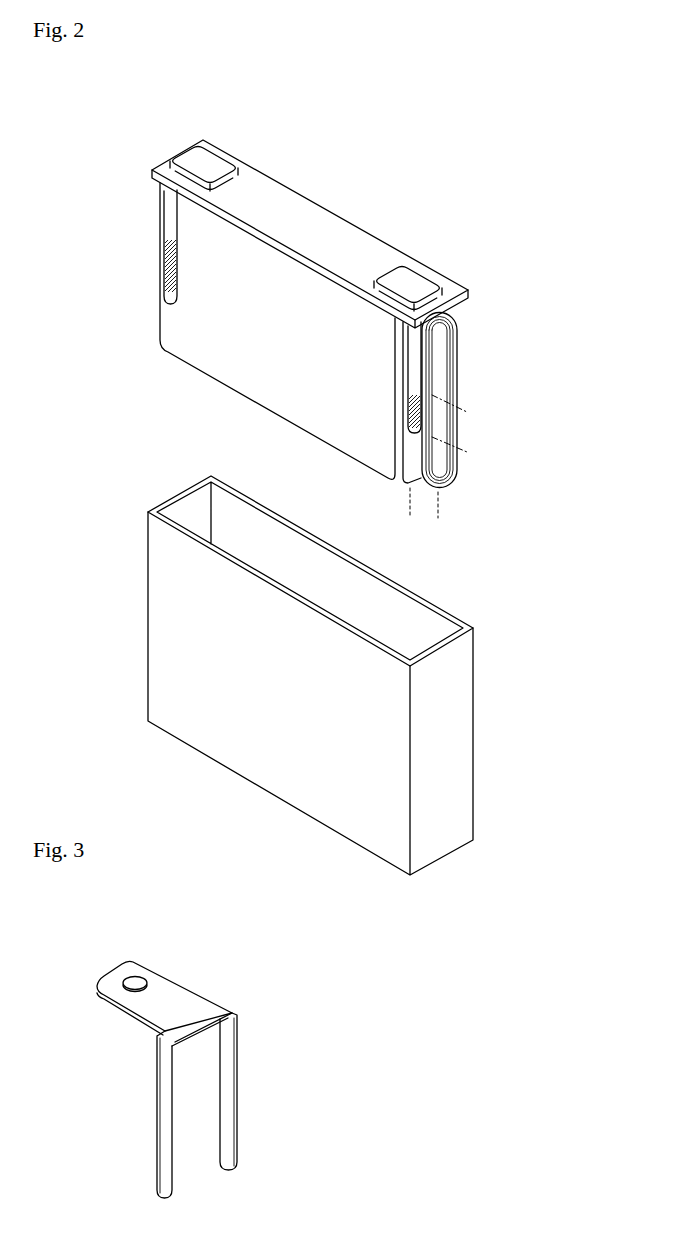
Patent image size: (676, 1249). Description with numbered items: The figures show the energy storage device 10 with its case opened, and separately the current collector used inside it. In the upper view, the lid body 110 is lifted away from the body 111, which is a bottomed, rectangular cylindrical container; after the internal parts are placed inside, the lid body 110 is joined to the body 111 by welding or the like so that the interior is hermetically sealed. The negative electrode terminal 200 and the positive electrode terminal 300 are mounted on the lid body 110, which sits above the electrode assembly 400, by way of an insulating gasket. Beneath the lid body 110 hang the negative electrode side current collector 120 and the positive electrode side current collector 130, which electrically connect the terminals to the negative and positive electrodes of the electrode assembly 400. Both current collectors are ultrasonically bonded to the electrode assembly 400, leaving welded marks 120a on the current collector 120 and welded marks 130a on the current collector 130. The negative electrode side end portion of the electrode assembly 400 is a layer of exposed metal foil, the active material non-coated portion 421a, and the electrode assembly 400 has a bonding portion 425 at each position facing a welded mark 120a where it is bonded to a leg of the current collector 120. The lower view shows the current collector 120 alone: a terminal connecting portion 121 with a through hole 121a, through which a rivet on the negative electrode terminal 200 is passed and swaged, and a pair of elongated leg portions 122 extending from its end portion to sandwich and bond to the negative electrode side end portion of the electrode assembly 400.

In FIG. 2, the energy storage device 10 is at (502, 130).
In FIG. 2, the lid body 110 is at (320, 220).
In FIG. 2, the body 111 is at (460, 722).
In FIG. 2, the negative electrode side current collector 120 is at (409, 350).
In FIG. 3, the negative electrode side current collector 120 is at (199, 1061).
In FIG. 2, the welded mark 120a is at (410, 397).
In FIG. 3, the terminal connecting portion 121 is at (168, 984).
In FIG. 3, the through hole 121a is at (131, 978).
In FIG. 3, the leg portion 122 is at (242, 1108).
In FIG. 2, the positive electrode side current collector 130 is at (159, 224).
In FIG. 2, the welded mark 130a is at (166, 256).
In FIG. 2, the negative electrode terminal 200 is at (412, 277).
In FIG. 2, the positive electrode terminal 300 is at (211, 160).
In FIG. 2, the electrode assembly 400 is at (457, 362).
In FIG. 2, the active material non-coated portion 421a is at (438, 518).
In FIG. 2, the bonding portion 425 is at (470, 412).